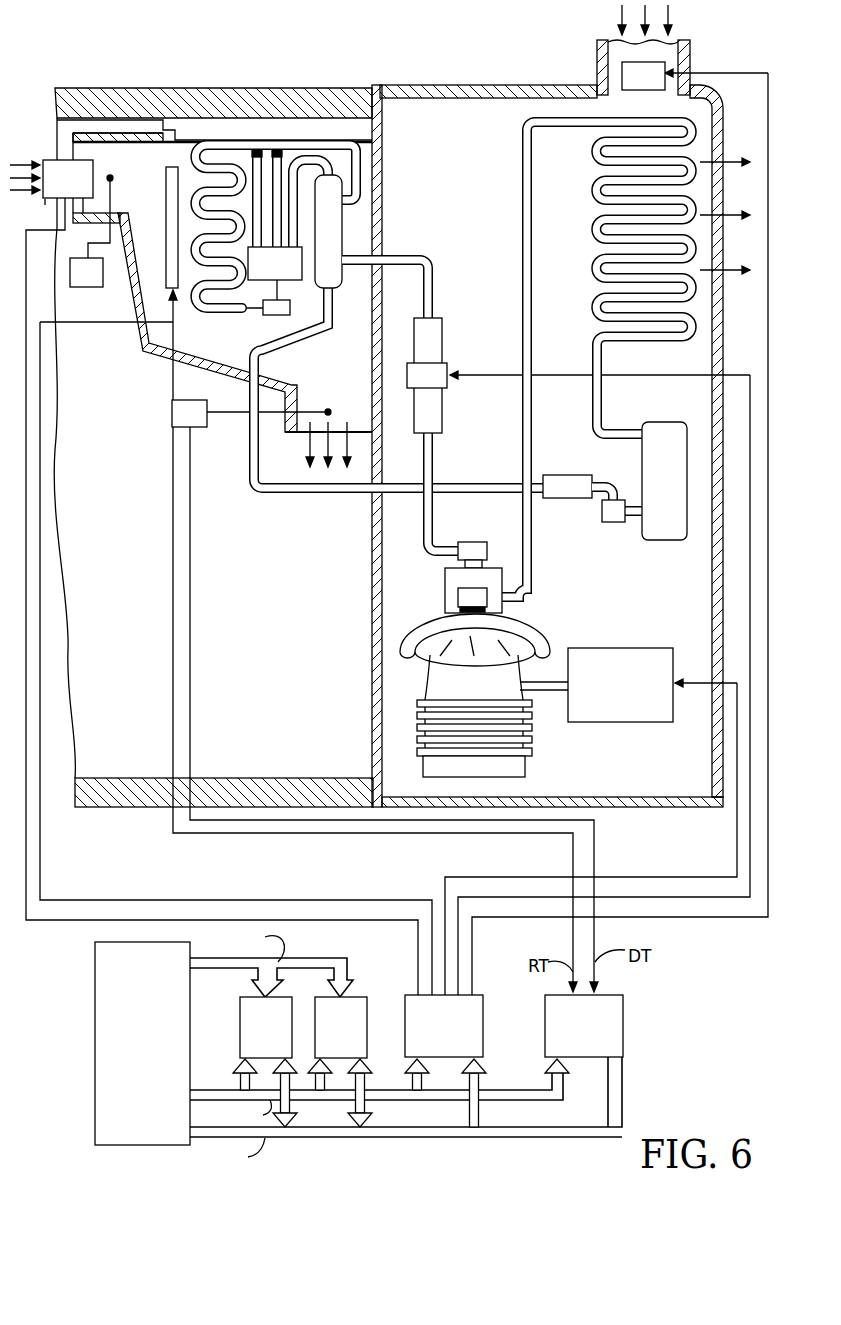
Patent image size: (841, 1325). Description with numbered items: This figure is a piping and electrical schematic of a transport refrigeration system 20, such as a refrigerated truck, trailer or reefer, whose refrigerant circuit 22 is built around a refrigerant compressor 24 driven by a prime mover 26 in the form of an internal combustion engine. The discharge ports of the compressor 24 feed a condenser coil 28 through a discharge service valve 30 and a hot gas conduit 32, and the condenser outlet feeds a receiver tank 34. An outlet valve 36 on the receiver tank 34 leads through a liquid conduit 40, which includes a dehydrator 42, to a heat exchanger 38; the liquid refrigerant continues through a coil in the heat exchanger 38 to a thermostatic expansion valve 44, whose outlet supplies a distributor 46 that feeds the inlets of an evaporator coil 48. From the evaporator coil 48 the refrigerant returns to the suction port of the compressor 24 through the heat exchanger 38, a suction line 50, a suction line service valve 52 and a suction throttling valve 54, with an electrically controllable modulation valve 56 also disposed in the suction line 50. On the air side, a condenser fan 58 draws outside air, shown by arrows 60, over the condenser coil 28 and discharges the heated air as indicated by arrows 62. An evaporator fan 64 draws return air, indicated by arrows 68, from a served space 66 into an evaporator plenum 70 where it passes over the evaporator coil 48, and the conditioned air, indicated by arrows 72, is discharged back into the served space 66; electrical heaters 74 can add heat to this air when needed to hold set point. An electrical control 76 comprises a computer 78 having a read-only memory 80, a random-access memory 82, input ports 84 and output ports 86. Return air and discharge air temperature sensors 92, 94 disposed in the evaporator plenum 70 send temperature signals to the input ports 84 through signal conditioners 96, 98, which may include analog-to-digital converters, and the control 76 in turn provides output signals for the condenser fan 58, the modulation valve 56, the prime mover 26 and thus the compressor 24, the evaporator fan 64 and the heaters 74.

The transport refrigeration system 20 is at (478, 71).
The refrigerant circuit 22 is at (522, 210).
The refrigerant compressor 24 is at (547, 645).
The prime mover 26 is at (630, 723).
The condenser coil 28 is at (592, 200).
The discharge service valve 30 is at (458, 600).
The hot gas conduit 32 is at (536, 225).
The receiver tank 34 is at (655, 422).
The outlet valve 36 is at (612, 522).
The heat exchanger 38 is at (336, 288).
The liquid conduit 40 is at (305, 492).
The dehydrator 42 is at (585, 474).
The thermostatic expansion valve 44 is at (290, 270).
The distributor 46 is at (280, 315).
The evaporator coil 48 is at (222, 315).
The suction line 50 is at (436, 296).
The suction line service valve 52 is at (480, 545).
The suction throttling valve 54 is at (447, 578).
The electrically controllable modulation valve 56 is at (447, 365).
The condenser fan 58 is at (660, 62).
The outside air arrows 60 is at (620, 18).
The discharged heated air arrows 62 is at (738, 183).
The evaporator fan 64 is at (48, 199).
The served space 66 is at (115, 724).
The return air arrows 68 is at (43, 158).
The evaporator plenum 70 is at (143, 338).
The conditioned air arrows 72 is at (310, 455).
The electrical heaters 74 is at (165, 195).
The electrical control 76 is at (393, 1170).
The microprocessor or computer 78 is at (227, 1006).
The read-only memory (ROM) 80 is at (240, 1028).
The random-access memory (RAM) 82 is at (367, 1018).
The input ports 84 is at (623, 1027).
The output ports 86 is at (483, 1030).
The return air temperature sensor 92 is at (113, 176).
The discharge air temperature sensor 94 is at (327, 408).
The signal conditioner 96 is at (103, 283).
The signal conditioner 98 is at (172, 408).